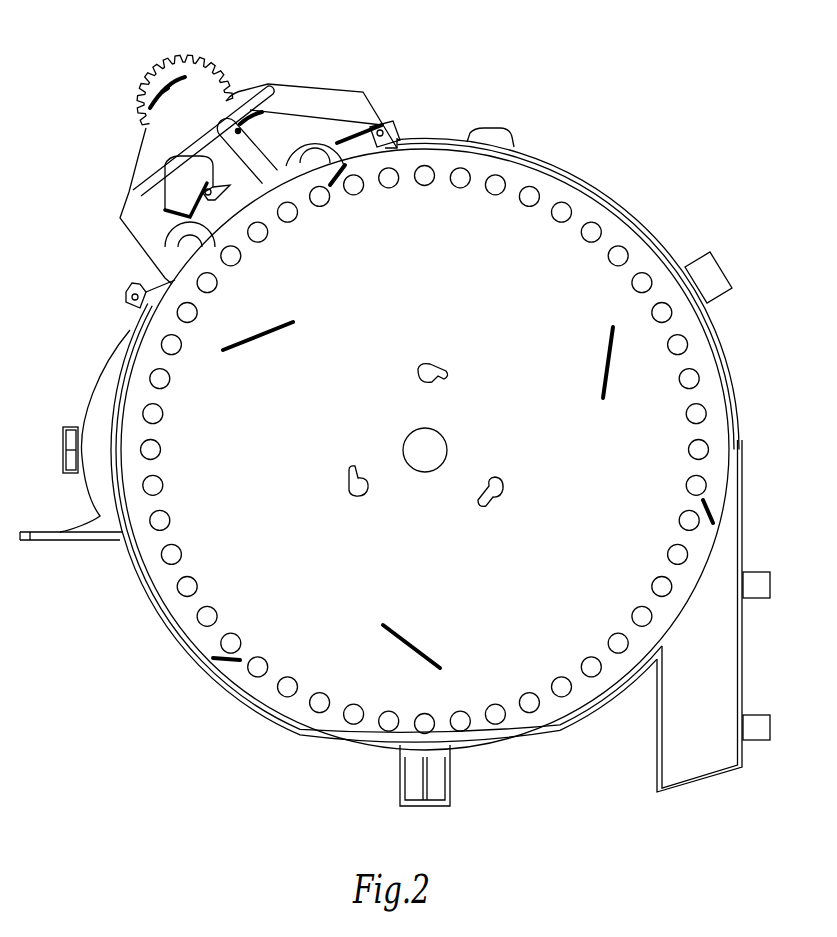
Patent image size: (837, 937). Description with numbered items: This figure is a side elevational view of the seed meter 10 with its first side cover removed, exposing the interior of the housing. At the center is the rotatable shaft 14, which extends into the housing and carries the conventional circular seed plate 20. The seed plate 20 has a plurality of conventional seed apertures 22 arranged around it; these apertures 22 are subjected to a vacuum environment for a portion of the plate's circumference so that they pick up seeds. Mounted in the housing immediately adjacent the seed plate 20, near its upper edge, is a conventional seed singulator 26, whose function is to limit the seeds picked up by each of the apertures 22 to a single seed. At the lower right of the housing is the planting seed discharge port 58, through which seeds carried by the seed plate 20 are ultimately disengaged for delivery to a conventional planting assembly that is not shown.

The seed meter 10 is at (518, 42).
The rotatable shaft 14 is at (425, 449).
The seed plate 20 is at (308, 642).
The seed apertures 22 is at (536, 188).
The seed singulator 26 is at (300, 89).
The planting seed discharge port 58 is at (704, 780).